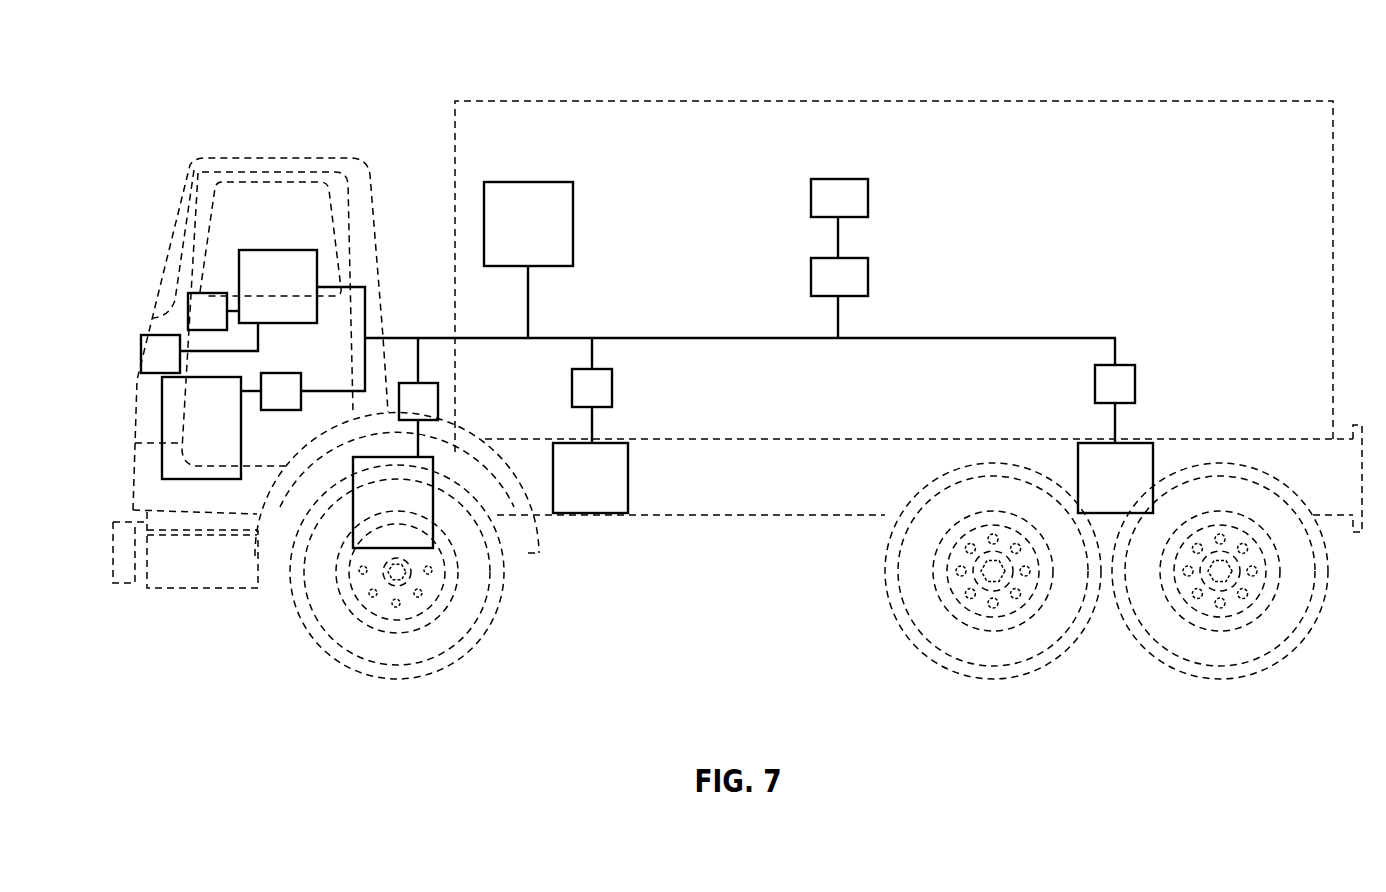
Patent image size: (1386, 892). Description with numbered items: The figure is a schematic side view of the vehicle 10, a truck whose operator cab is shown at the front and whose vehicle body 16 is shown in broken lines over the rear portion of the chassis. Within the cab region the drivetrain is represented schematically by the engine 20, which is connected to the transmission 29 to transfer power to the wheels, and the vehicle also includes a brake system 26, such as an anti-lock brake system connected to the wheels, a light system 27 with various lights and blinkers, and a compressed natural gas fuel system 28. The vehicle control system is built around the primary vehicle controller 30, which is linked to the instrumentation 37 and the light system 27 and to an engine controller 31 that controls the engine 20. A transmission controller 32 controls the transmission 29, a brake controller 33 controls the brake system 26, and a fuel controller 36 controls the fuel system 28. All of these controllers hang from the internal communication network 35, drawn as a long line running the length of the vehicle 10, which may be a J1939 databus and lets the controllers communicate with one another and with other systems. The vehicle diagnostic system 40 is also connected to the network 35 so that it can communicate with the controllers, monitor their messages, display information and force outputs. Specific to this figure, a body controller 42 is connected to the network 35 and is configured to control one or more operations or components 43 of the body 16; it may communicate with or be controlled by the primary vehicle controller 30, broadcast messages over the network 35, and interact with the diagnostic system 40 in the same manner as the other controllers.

The vehicle 10 is at (522, 572).
The vehicle body 16 is at (1268, 101).
The engine 20 is at (185, 441).
The brake system 26 is at (1099, 491).
The light system 27 is at (144, 367).
The fuel system 28 is at (574, 491).
The transmission 29 is at (376, 515).
The primary vehicle controller 30 is at (261, 286).
The engine controller 31 is at (264, 405).
The transmission controller 32 is at (402, 415).
The brake controller 33 is at (1098, 398).
The internal communication network 35 is at (897, 328).
The fuel controller 36 is at (575, 402).
The instrumentation 37 is at (191, 325).
The vehicle diagnostic system 40 is at (511, 237).
The body controller 42 is at (822, 291).
The body operations or components 43 is at (822, 212).